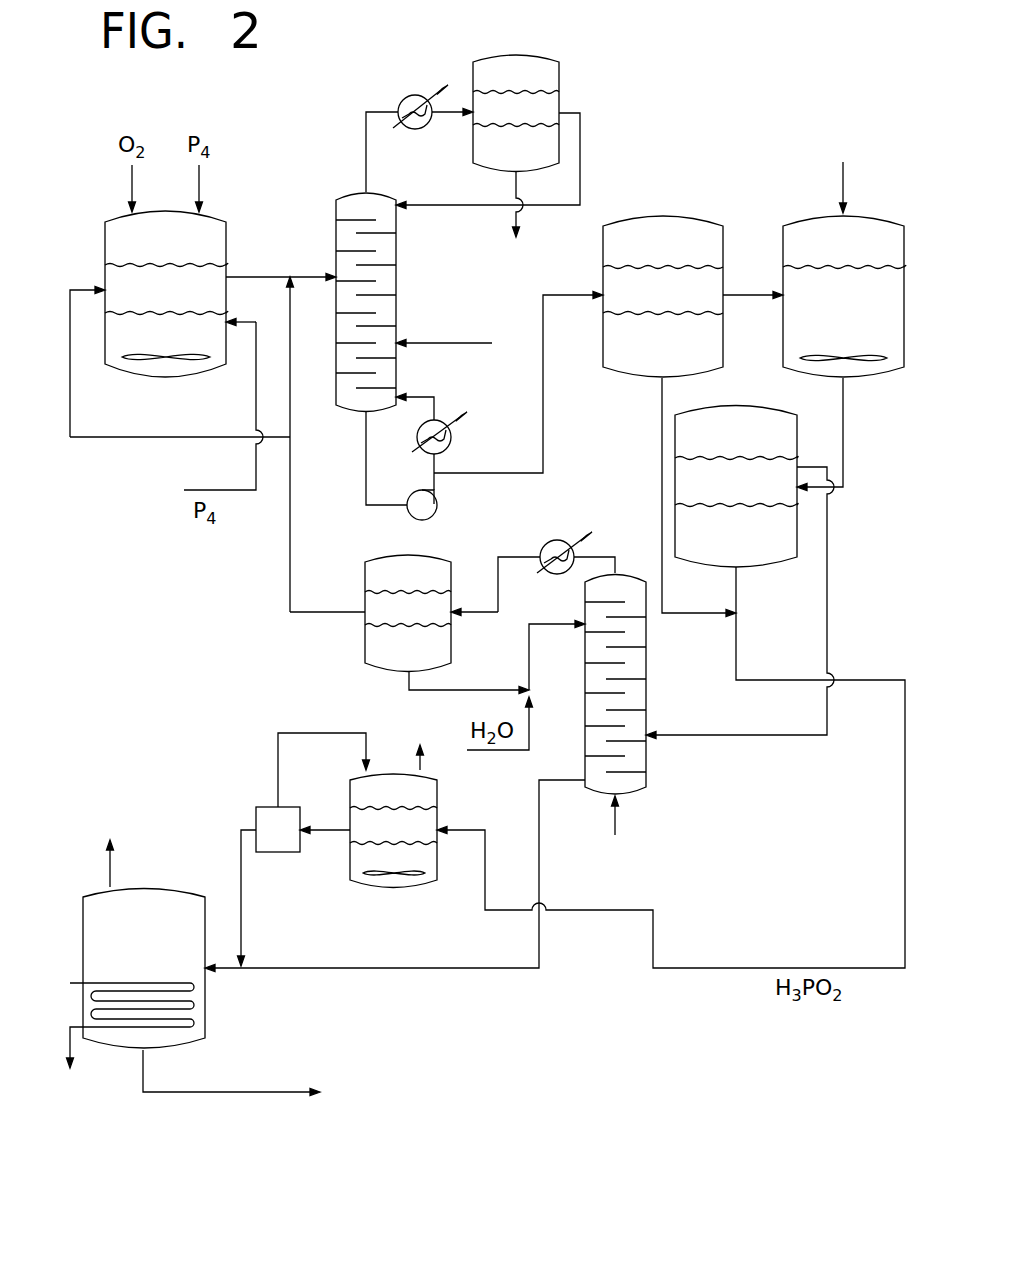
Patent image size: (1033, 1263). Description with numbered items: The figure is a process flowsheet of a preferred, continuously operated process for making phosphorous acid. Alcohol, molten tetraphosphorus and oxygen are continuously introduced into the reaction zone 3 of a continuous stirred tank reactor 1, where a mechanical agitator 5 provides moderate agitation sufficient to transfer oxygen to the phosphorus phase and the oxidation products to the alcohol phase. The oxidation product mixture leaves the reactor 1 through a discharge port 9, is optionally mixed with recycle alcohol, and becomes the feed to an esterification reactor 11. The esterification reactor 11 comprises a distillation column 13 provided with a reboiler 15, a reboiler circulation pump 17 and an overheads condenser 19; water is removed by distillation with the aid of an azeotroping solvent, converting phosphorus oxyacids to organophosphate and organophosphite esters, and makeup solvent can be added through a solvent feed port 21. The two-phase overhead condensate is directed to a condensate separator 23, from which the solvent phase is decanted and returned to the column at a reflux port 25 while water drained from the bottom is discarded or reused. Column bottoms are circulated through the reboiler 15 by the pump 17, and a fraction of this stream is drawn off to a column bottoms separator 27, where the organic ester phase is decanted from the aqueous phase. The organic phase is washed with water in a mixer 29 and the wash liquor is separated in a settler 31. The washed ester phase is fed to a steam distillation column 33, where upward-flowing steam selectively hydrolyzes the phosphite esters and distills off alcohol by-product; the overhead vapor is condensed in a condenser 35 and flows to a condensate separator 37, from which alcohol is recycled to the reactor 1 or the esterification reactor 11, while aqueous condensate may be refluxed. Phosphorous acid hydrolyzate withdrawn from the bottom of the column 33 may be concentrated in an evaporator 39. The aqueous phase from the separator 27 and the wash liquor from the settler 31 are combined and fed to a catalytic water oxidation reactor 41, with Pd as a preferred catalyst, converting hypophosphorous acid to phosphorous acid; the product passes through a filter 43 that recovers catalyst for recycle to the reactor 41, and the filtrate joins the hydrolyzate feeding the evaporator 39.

The continuous stirred tank reactor 1 is at (105, 265).
The reaction zone 3 is at (199, 268).
The mechanical agitator 5 is at (187, 365).
The discharge port 9 is at (226, 277).
The esterification reactor 11 is at (310, 205).
The distillation column 13 is at (390, 287).
The reboiler 15 is at (450, 441).
The reboiler circulation pump 17 is at (432, 515).
The overheads condenser 19 is at (402, 102).
The solvent feed port 21 is at (422, 346).
The condensate separator 23 is at (560, 102).
The reflux port 25 is at (420, 205).
The column bottoms separator 27 is at (648, 212).
The mixer 29 is at (782, 320).
The settler 31 is at (765, 405).
The steam distillation column 33 is at (585, 750).
The condenser 35 is at (553, 540).
The condensate separator 37 is at (365, 635).
The evaporator 39 is at (83, 947).
The catalytic water oxidation reactor 41 is at (255, 817).
The filter 43 is at (268, 855).